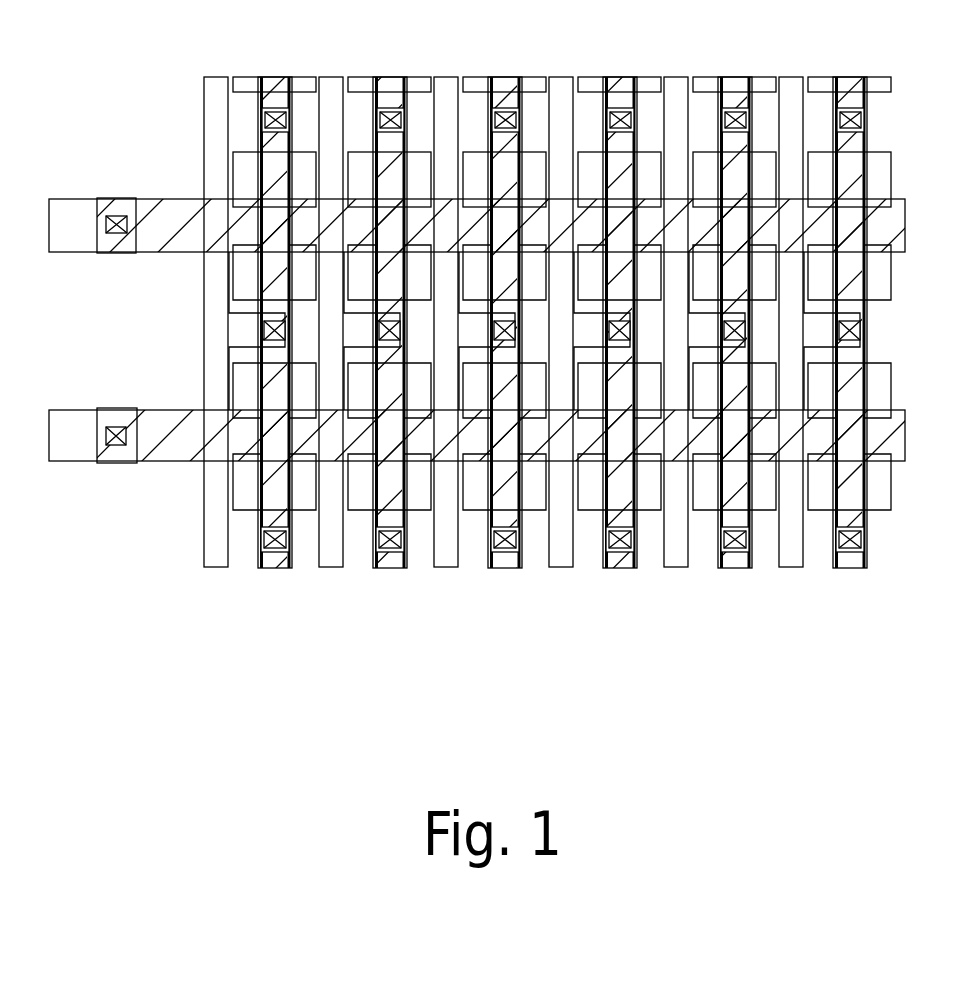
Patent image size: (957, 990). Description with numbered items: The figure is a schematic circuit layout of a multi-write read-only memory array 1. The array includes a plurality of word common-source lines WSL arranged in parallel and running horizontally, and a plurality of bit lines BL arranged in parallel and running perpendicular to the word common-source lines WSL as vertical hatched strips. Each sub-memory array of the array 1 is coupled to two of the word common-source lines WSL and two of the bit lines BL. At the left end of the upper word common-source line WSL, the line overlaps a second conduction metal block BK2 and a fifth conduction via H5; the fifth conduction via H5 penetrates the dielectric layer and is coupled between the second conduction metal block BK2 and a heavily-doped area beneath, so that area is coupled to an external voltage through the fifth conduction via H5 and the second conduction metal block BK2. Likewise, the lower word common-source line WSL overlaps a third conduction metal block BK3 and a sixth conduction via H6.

The multi-write read-only memory array 1 is at (478, 396).
The bit lines BL is at (199, 110).
The word common-source lines WSL is at (176, 189).
The second conduction metal block BK2 is at (67, 230).
The third conduction metal block BK3 is at (67, 447).
The fifth conduction via H5 is at (108, 233).
The sixth conduction via H6 is at (110, 445).